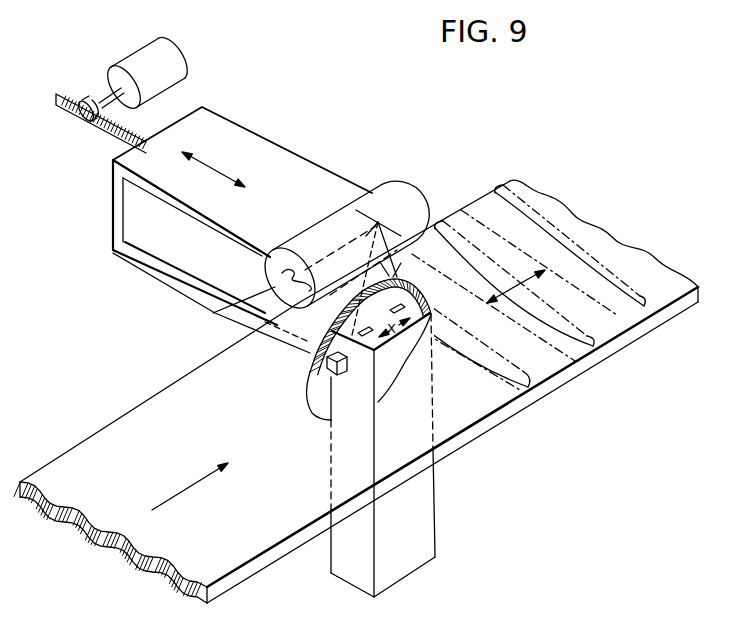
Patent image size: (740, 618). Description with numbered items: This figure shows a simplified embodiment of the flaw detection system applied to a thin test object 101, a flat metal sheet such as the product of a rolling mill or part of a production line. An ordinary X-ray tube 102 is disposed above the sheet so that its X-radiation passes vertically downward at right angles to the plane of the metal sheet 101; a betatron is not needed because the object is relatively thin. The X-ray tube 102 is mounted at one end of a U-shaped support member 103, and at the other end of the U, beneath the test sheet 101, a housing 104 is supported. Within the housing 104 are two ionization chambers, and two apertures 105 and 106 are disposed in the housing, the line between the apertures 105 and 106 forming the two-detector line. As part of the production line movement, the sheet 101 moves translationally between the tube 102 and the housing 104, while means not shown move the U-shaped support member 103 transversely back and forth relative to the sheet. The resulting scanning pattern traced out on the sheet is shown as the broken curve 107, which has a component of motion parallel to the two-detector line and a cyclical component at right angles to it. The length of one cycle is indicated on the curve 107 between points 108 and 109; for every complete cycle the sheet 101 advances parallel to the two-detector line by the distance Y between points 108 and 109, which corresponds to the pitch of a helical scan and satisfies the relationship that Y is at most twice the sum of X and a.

The test object 101 is at (95, 436).
The X-ray tube 102 is at (412, 184).
The U-shaped support member 103 is at (218, 117).
The housing 104 is at (436, 490).
The aperture 105 is at (400, 286).
The aperture 106 is at (311, 369).
The broken curve 107 is at (565, 213).
The point 108 is at (481, 309).
The point 109 is at (547, 266).